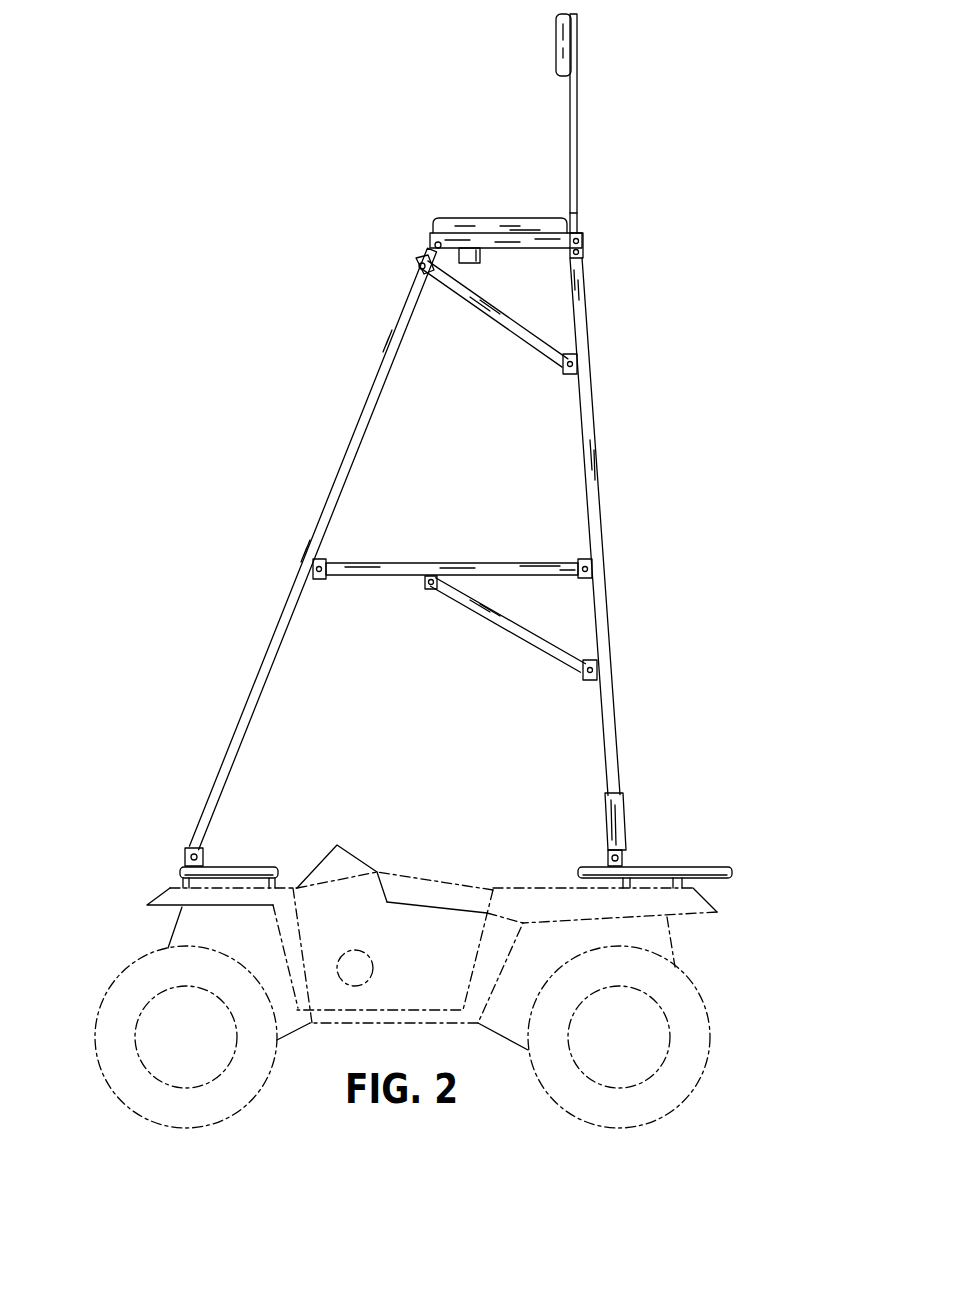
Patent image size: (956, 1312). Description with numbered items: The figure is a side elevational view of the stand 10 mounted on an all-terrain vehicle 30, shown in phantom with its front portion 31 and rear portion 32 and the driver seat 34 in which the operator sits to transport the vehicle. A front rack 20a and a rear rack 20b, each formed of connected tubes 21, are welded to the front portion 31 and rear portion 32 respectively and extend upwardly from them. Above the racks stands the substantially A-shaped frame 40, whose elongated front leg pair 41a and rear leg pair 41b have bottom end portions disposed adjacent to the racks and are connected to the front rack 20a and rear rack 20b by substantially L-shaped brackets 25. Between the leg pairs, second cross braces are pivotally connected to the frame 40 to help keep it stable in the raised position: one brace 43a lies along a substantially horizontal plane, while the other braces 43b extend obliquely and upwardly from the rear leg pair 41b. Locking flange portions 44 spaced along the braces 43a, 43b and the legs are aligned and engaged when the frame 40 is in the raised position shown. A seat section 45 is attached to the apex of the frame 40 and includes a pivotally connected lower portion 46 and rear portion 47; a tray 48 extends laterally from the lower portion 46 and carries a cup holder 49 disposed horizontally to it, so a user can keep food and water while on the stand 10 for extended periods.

The stand 10 is at (230, 143).
The front rack 20a is at (259, 867).
The rear rack 20b is at (713, 867).
The tubes 21 is at (620, 803).
The brackets 25 is at (185, 855).
The vehicle 30 is at (377, 870).
The front portion 31 is at (177, 923).
The rear portion 32 is at (672, 940).
The driver seat 34 is at (445, 880).
The frame 40 is at (375, 370).
The front leg pair 41a is at (327, 492).
The rear leg pair 41b is at (597, 437).
The horizontal second cross brace 43a is at (500, 562).
The oblique second cross braces 43b is at (470, 300).
The locking flange portions 44 is at (566, 377).
The seat section 45 is at (578, 128).
The lower portion 46 is at (537, 218).
The rear portion 47 is at (556, 40).
The tray 48 is at (486, 233).
The cup holder 49 is at (482, 258).